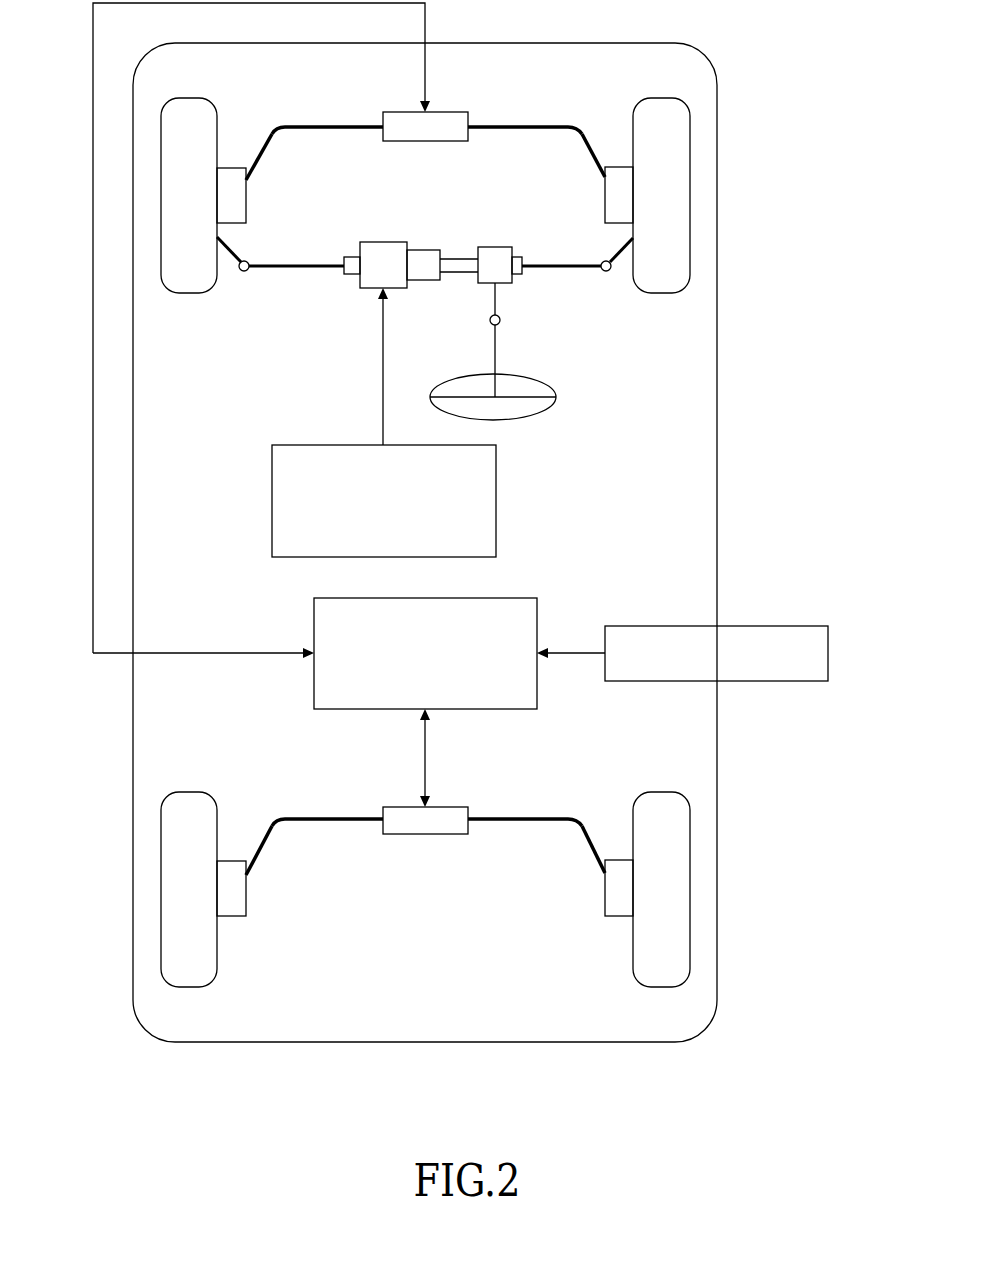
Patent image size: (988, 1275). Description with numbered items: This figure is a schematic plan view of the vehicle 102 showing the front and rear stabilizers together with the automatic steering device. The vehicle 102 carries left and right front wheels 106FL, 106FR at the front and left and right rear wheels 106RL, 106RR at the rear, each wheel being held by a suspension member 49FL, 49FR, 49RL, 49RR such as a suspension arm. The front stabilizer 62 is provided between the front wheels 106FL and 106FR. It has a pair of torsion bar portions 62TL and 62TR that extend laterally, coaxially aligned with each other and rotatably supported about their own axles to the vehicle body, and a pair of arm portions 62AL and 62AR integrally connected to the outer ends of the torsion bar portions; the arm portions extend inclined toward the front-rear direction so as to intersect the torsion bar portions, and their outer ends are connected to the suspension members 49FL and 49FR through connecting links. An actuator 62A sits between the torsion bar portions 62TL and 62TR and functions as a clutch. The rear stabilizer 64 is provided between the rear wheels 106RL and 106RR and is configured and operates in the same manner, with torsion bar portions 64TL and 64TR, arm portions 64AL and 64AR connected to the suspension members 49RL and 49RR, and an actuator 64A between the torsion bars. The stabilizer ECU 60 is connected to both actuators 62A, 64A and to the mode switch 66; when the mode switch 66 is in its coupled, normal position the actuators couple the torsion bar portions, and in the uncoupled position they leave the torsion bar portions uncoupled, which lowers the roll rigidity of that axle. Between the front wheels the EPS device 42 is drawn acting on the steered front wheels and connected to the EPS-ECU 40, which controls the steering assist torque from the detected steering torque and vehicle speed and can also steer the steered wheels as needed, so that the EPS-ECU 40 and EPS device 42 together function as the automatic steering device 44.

The vehicle 102 is at (717, 410).
The left front wheel 106FL is at (189, 294).
The right front wheel 106FR is at (660, 294).
The left rear wheel 106RL is at (161, 888).
The right rear wheel 106RR is at (690, 888).
The suspension member 49FL is at (232, 165).
The suspension member 49FR is at (621, 165).
The suspension member 49RL is at (232, 859).
The suspension member 49RR is at (621, 857).
The front stabilizer 62 is at (425, 129).
The torsion bar portion 62TL is at (307, 124).
The torsion bar portion 62TR is at (511, 124).
The arm portion 62AL is at (262, 150).
The arm portion 62AR is at (590, 150).
The actuator 62A is at (410, 143).
The rear stabilizer 64 is at (425, 818).
The torsion bar portion 64TL is at (307, 817).
The torsion bar portion 64TR is at (507, 817).
The arm portion 64AL is at (262, 842).
The arm portion 64AR is at (590, 842).
The actuator 64A is at (418, 835).
The EPS device 42 is at (433, 232).
The automatic steering device 44 is at (260, 413).
The electric power steering ECU 40 is at (384, 501).
The stabilizer ECU 60 is at (315, 405).
The mode switch 66 is at (774, 625).